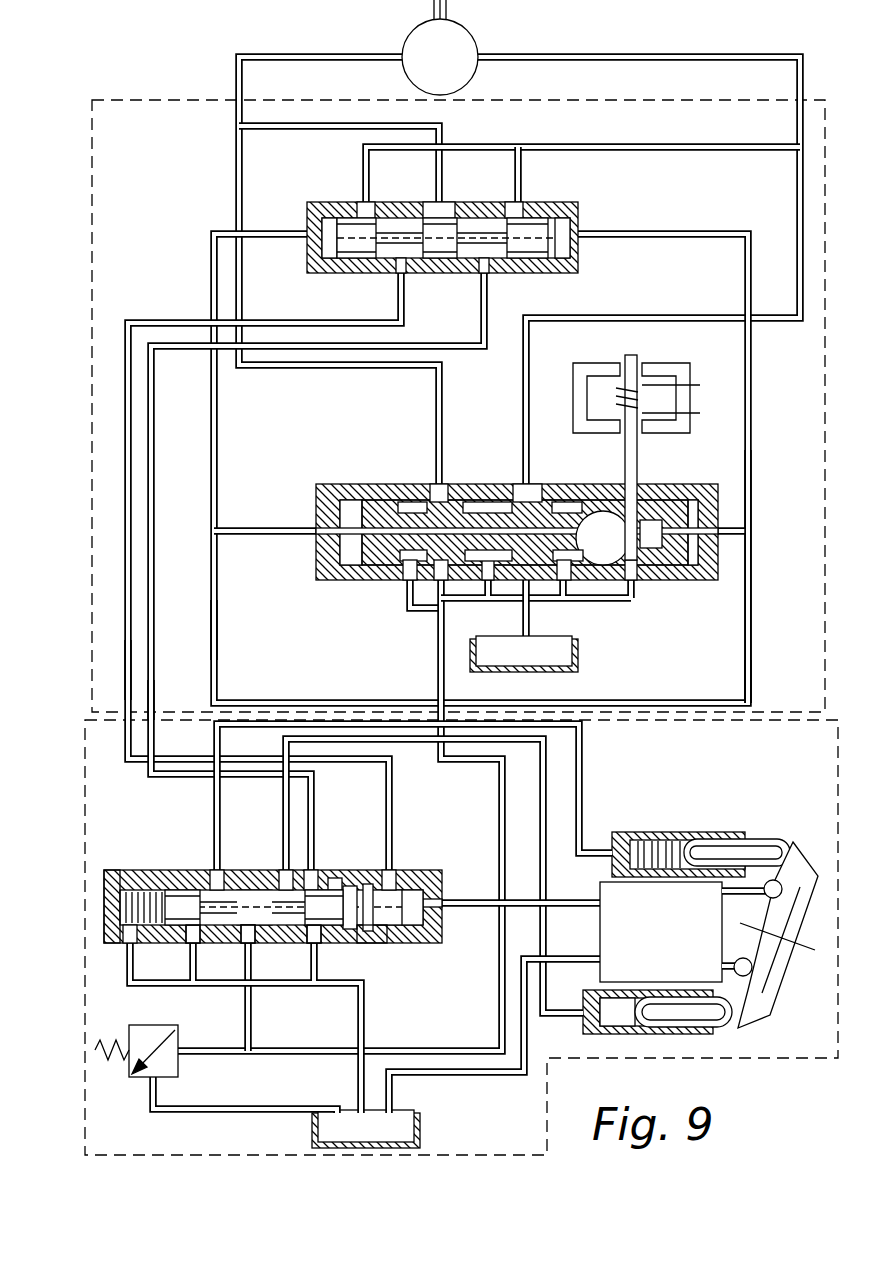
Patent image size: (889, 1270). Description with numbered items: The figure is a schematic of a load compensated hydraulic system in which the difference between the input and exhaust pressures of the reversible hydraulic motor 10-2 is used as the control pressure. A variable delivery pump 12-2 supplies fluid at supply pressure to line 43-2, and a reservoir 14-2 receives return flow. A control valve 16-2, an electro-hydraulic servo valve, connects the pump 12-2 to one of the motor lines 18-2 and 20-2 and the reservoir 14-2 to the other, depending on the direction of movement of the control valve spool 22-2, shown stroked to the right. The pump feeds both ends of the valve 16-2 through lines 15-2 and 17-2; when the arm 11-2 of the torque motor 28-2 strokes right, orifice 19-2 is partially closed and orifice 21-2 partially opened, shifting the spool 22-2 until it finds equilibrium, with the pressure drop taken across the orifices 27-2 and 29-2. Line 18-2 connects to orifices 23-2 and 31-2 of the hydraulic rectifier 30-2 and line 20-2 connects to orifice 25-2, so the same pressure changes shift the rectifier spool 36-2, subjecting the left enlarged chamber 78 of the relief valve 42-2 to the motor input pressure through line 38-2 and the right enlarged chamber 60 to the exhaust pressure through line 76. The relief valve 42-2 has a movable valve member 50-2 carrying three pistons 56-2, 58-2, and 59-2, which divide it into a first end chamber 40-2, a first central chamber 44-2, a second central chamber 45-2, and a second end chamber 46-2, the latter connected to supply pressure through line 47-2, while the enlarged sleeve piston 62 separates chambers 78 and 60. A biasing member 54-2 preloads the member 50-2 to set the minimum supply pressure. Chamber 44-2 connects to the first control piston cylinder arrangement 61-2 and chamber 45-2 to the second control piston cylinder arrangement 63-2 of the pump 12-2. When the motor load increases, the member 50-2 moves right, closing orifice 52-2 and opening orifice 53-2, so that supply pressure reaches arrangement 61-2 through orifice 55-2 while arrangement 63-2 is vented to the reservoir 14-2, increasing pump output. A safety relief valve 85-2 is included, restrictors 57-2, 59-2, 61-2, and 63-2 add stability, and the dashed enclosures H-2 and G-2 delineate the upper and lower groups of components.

The reversible hydraulic motor 10-2 is at (473, 34).
The motor line 20-2 is at (308, 53).
The motor line 18-2 is at (792, 50).
The hydraulic rectifier 30-2 is at (578, 217).
The orifice 31-2 is at (376, 212).
The orifice 25-2 is at (452, 212).
The orifice 23-2 is at (528, 212).
The spool 36-2 is at (505, 258).
The torque motor 28-2 is at (683, 368).
The arm 11-2 is at (637, 445).
The control valve 16-2 is at (320, 484).
The orifice 29-2 is at (432, 486).
The control valve spool 22-2 is at (472, 500).
The orifice 27-2 is at (545, 486).
The orifice 21-2 is at (570, 578).
The orifice 19-2 is at (640, 566).
The hydraulic unit H-2 is at (92, 508).
The second control piston cylinder arrangement 63-2 is at (124, 620).
The first control piston cylinder arrangement 61-2 is at (154, 626).
The restrictor 57-2 is at (218, 634).
The line 17-2 is at (218, 668).
The line 76 is at (124, 670).
The line 38-2 is at (154, 700).
The line 43-2 is at (437, 660).
The reservoir 14-2 is at (578, 660).
The piston 59-2 is at (752, 622).
The line 15-2 is at (752, 686).
The relief valve 42-2 is at (104, 878).
The first end chamber 40-2 is at (124, 884).
The piston 56-2 is at (175, 884).
The piston 58-2 is at (258, 885).
The movable valve member 50-2 is at (240, 884).
The first enlarged chamber 78 is at (335, 884).
The enlarged sleeve piston 62 is at (362, 882).
The biasing member 54-2 is at (120, 900).
The line 47-2 is at (460, 900).
The second end chamber 46-2 is at (428, 924).
The variable delivery pump 12-2 is at (612, 926).
The orifice 52-2 is at (182, 944).
The first central chamber 44-2 is at (222, 944).
The second central chamber 45-2 is at (288, 944).
The orifice 53-2 is at (318, 944).
The second enlarged chamber 60 is at (382, 944).
The orifice 55-2 is at (252, 980).
The safety relief valve 85-2 is at (180, 1012).
The hydraulic unit G-2 is at (85, 1142).